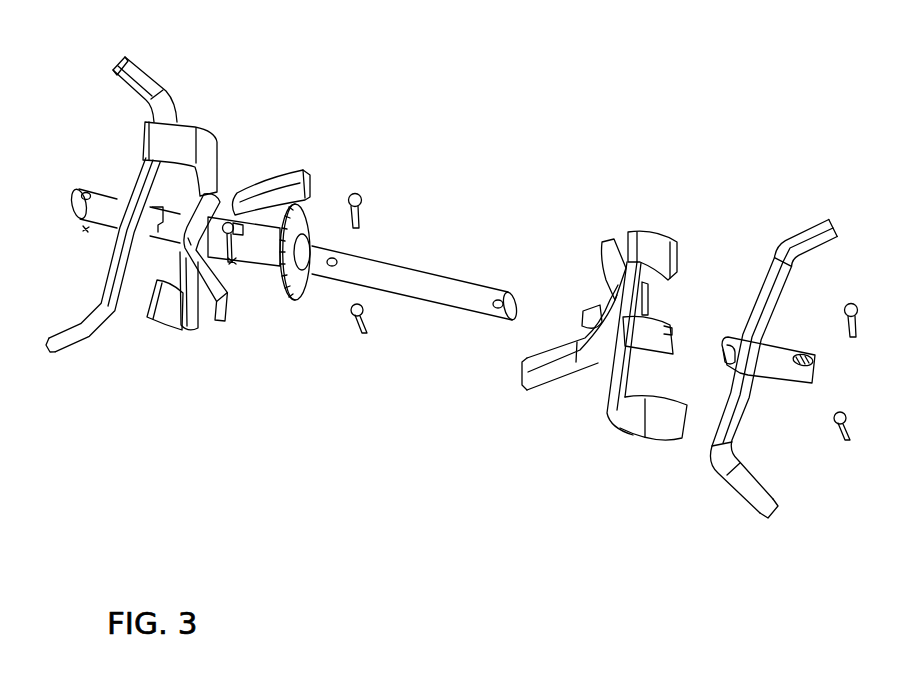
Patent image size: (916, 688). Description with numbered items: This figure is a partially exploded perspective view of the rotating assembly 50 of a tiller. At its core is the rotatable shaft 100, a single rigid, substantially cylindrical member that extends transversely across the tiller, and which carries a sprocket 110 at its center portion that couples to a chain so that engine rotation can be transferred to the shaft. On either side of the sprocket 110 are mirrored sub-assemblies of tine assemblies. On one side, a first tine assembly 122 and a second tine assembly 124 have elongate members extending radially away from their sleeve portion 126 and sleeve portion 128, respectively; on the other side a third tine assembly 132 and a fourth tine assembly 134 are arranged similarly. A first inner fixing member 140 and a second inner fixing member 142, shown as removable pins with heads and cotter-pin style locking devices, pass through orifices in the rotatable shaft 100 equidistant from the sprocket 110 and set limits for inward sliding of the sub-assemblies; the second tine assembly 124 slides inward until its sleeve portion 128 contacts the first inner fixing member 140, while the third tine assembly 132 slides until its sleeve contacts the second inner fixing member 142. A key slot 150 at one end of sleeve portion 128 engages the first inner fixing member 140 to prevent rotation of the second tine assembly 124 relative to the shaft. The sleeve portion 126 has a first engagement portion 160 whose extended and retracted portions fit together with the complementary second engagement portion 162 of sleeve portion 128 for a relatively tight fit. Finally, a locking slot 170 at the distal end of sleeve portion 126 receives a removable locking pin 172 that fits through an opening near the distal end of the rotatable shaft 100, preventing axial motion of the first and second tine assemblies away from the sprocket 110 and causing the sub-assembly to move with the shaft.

The rotating assembly 50 is at (711, 69).
The rotatable shaft 100 is at (438, 295).
The sprocket 110 is at (288, 296).
The first tine assembly 122 is at (796, 215).
The second tine assembly 124 is at (655, 215).
The sleeve portion 126 is at (763, 367).
The sleeve portion 128 is at (637, 337).
The third tine assembly 132 is at (205, 342).
The fourth tine assembly 134 is at (98, 358).
The first inner fixing member 140 is at (362, 208).
The second inner fixing member 142 is at (231, 264).
The key slot 150 is at (582, 303).
The first engagement portion 160 is at (714, 360).
The second engagement portion 162 is at (668, 320).
The locking slot 170 is at (809, 367).
The locking pin 172 is at (854, 310).